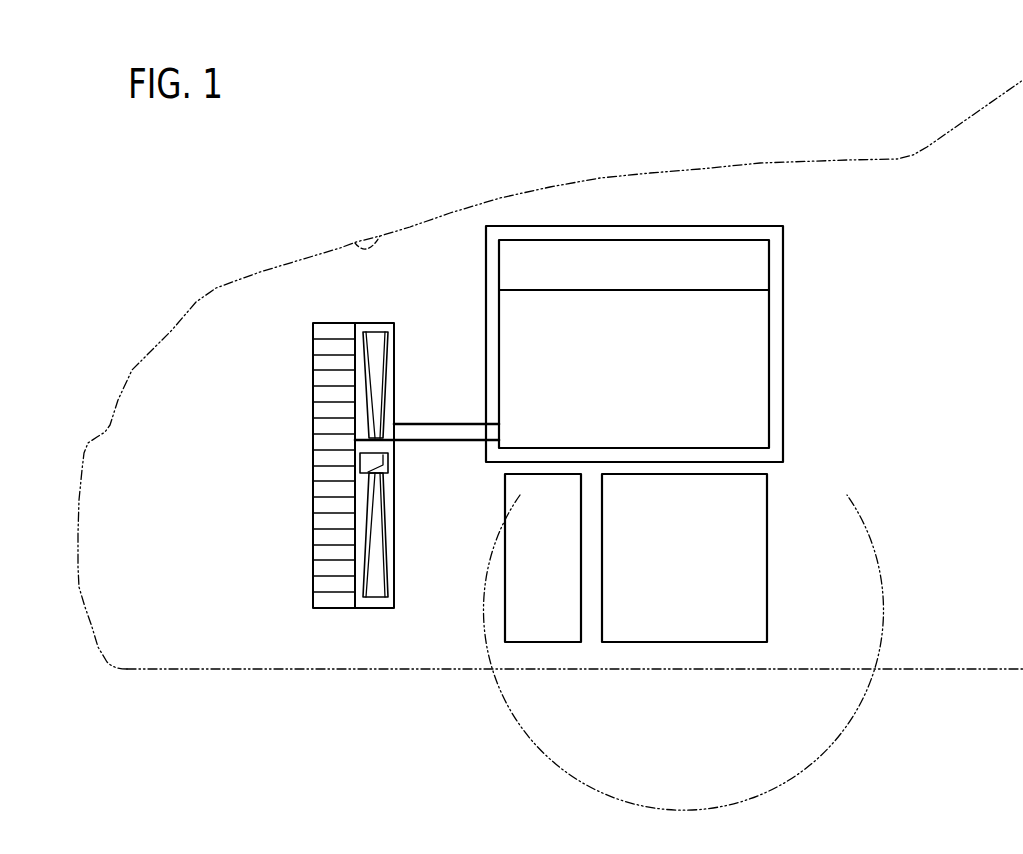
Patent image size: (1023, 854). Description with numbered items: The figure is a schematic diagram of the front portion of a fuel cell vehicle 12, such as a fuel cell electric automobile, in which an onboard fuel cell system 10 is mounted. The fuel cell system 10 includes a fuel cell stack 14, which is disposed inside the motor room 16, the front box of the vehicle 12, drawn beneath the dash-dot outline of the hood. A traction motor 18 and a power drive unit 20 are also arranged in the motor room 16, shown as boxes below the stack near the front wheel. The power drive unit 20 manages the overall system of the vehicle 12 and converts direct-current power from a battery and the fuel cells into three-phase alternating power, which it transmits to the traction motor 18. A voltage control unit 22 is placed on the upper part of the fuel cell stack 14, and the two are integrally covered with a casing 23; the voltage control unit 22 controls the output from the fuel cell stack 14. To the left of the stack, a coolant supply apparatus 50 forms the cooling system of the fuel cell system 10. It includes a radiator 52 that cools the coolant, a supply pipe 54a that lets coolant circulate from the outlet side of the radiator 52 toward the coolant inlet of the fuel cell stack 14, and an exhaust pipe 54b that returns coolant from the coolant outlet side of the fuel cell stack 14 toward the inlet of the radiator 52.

The onboard fuel cell system 10 is at (339, 129).
The fuel cell vehicle 12 is at (853, 158).
The fuel cell stack 14 is at (761, 317).
The motor room 16 is at (380, 236).
The traction motor 18 is at (727, 633).
The power drive unit 20 is at (562, 633).
The voltage control unit 22 is at (760, 259).
The casing 23 is at (739, 225).
The coolant supply apparatus 50 is at (427, 461).
The radiator 52 is at (316, 556).
The supply pipe 54a is at (442, 442).
The exhaust pipe 54b is at (417, 422).